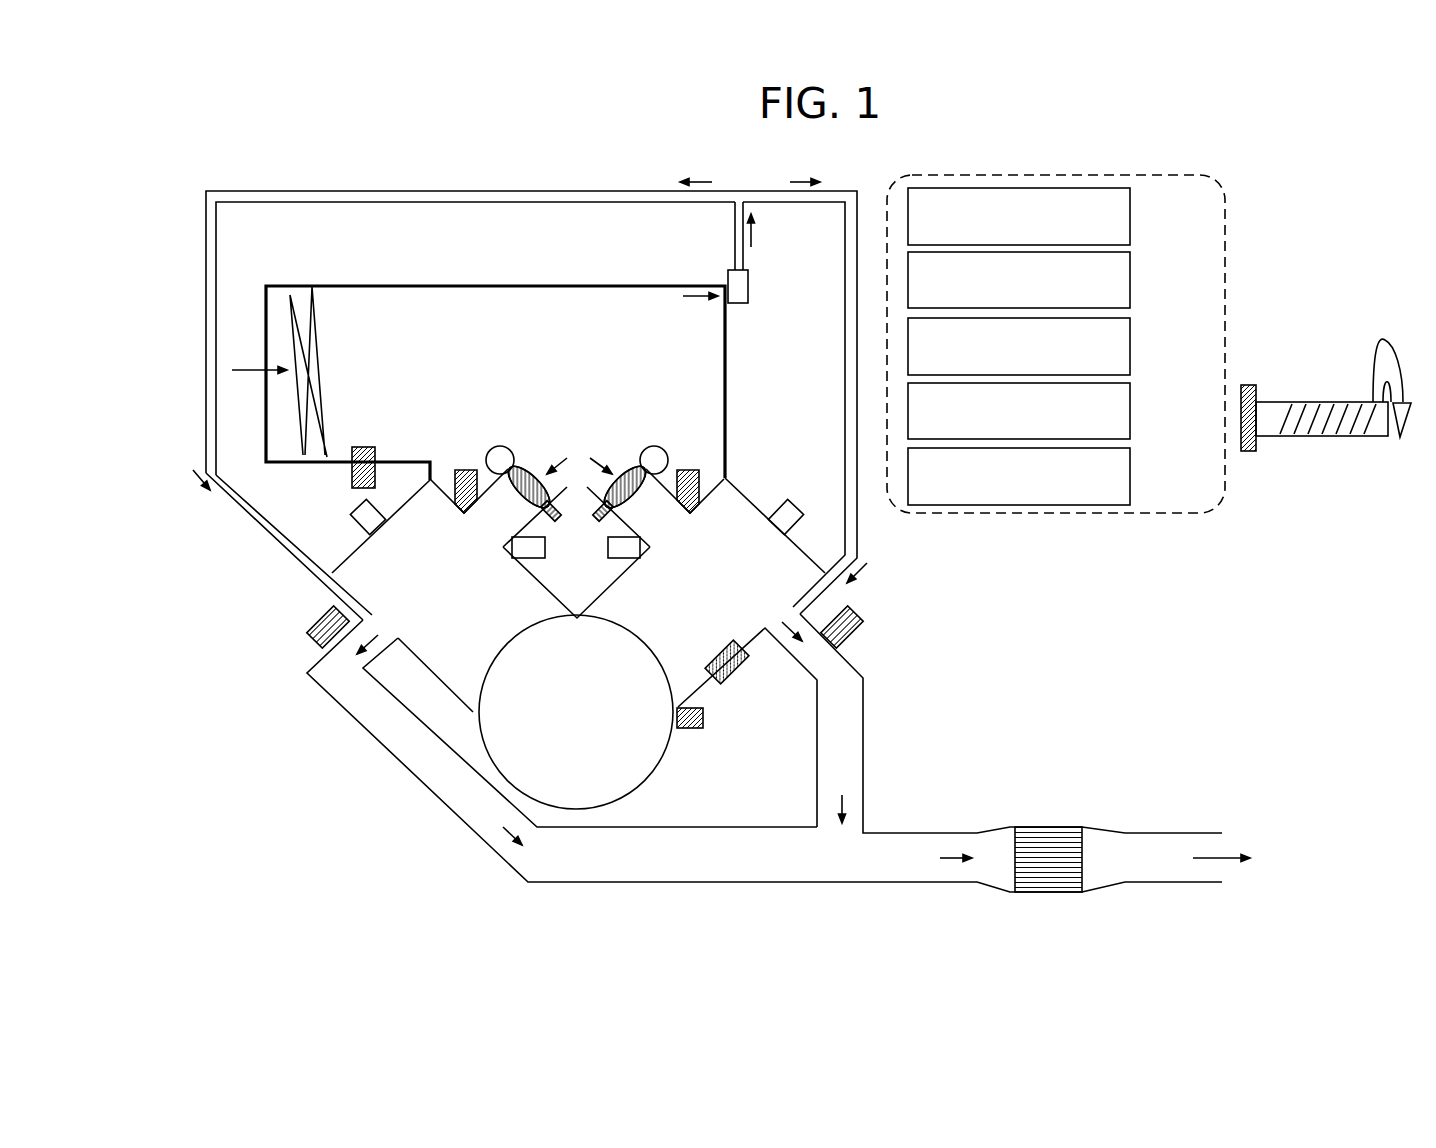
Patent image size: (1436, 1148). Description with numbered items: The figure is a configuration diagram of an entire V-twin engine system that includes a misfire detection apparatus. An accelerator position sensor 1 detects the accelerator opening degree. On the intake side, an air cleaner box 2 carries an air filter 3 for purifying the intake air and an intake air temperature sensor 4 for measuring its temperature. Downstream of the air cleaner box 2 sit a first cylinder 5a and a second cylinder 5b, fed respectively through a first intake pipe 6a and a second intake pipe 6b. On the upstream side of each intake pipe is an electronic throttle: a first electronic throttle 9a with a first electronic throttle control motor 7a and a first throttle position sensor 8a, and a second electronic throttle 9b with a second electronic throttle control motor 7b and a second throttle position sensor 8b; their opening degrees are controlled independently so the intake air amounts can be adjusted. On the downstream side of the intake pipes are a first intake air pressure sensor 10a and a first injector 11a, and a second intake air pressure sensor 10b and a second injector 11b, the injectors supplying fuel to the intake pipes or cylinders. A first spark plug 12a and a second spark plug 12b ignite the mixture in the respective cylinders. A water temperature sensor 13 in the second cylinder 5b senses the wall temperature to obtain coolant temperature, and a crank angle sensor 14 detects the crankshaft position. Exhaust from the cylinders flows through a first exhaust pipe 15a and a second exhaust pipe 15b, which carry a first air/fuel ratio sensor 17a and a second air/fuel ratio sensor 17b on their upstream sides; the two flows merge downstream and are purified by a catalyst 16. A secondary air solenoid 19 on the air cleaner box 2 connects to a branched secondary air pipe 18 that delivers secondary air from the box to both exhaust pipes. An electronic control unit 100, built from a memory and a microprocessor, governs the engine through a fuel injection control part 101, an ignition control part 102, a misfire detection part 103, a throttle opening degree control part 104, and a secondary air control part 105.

The accelerator position sensor 1 is at (1251, 452).
The air cleaner box 2 is at (587, 285).
The air filter 3 is at (318, 330).
The intake air temperature sensor 4 is at (362, 447).
The first cylinder 5a is at (343, 562).
The second cylinder 5b is at (754, 505).
The first intake pipe 6a is at (521, 458).
The second intake pipe 6b is at (632, 468).
The first electronic throttle control motor 7a is at (494, 450).
The second electronic throttle control motor 7b is at (667, 457).
The first throttle position sensor 8a is at (549, 518).
The second throttle position sensor 8b is at (600, 525).
The first electronic throttle 9a is at (537, 468).
The second electronic throttle 9b is at (618, 470).
The first intake air pressure sensor 10a is at (457, 470).
The second intake air pressure sensor 10b is at (692, 470).
The first injector 11a is at (530, 560).
The second injector 11b is at (620, 560).
The first spark plug 12a is at (351, 509).
The second spark plug 12b is at (792, 500).
The water temperature sensor 13 is at (740, 680).
The crank angle sensor 14 is at (690, 729).
The first exhaust pipe 15a is at (378, 740).
The second exhaust pipe 15b is at (865, 740).
The catalyst 16 is at (1050, 827).
The first air/fuel ratio sensor 17a is at (312, 612).
The second air/fuel ratio sensor 17b is at (858, 612).
The secondary air pipe 18 is at (457, 190).
The secondary air solenoid 19 is at (760, 268).
The electronic control unit 100 is at (1226, 226).
The fuel injection control part 101 is at (1130, 218).
The ignition control part 102 is at (1130, 280).
The misfire detection part 103 is at (1130, 346).
The throttle opening degree control part 104 is at (1130, 410).
The secondary air control part 105 is at (1130, 475).